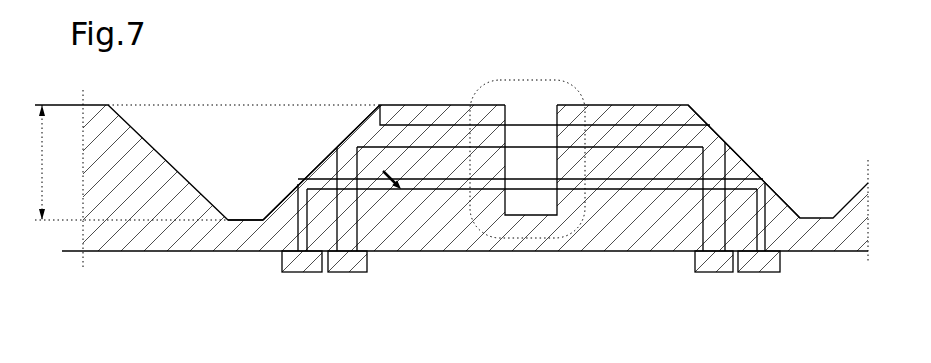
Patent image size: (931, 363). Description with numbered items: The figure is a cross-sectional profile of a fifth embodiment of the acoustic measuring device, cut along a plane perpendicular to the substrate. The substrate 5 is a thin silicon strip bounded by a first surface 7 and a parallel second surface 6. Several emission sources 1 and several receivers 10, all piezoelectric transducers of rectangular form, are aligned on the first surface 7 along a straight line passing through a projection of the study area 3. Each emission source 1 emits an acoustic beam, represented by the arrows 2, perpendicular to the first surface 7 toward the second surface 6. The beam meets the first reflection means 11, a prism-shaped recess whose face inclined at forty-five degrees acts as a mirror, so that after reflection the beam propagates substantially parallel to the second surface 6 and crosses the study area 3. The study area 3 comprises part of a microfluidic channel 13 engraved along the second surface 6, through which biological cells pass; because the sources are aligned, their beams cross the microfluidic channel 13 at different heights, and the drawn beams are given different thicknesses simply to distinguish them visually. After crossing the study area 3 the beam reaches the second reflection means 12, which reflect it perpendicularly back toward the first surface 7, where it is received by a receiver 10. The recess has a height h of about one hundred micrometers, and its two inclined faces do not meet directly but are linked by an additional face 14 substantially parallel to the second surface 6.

The emission source 1 is at (302, 273).
The arrows 2 is at (305, 138).
The study area 3 is at (555, 81).
The substrate 5 is at (640, 243).
The second surface 6 is at (394, 104).
The first surface 7 is at (568, 252).
The receiver 10 is at (712, 273).
The first reflection means 11 is at (289, 180).
The second reflection means 12 is at (750, 146).
The microfluidic channel 13 is at (522, 113).
The additional face 14 is at (240, 221).
The height h is at (42, 138).